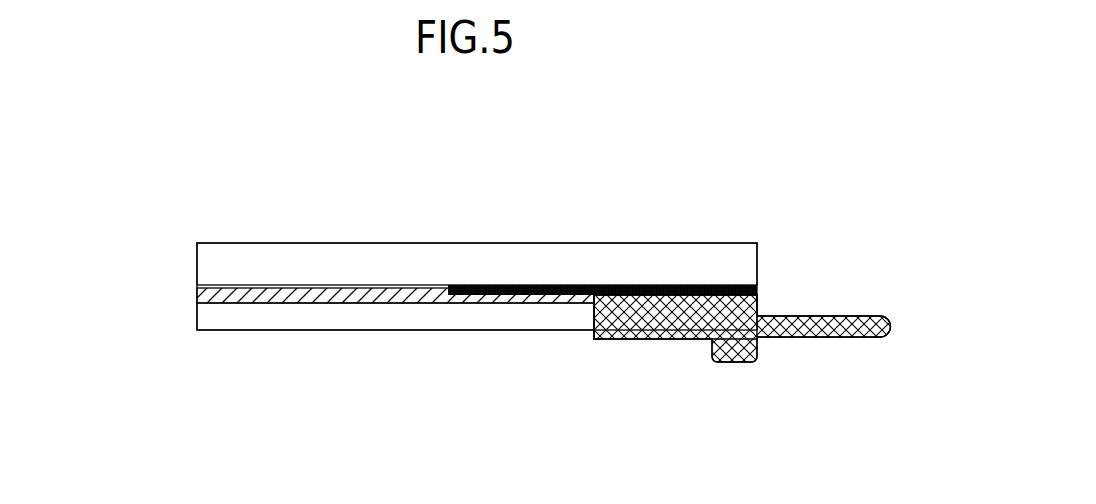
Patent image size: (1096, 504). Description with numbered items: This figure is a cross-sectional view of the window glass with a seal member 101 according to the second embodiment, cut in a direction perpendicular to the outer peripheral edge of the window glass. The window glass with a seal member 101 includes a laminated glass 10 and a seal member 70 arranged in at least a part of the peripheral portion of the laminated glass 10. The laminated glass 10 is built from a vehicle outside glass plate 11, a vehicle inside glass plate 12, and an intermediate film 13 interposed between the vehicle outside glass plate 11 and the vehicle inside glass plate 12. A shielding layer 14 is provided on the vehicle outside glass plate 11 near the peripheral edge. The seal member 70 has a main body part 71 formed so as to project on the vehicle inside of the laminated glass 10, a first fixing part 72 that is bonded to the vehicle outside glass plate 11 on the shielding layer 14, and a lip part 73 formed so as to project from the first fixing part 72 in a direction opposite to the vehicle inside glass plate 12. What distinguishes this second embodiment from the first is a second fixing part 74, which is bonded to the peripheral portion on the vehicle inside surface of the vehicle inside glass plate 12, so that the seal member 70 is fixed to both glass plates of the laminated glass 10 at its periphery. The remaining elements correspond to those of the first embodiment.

The window glass with a seal member 101 is at (117, 138).
The laminated glass 10 is at (345, 225).
The vehicle outside glass plate 11 is at (175, 262).
The vehicle inside glass plate 12 is at (175, 322).
The intermediate film 13 is at (175, 296).
The shielding layer 14 is at (501, 262).
The seal member 70 is at (780, 288).
The main body part 71 is at (749, 367).
The first fixing part 72 is at (667, 340).
The lip part 73 is at (803, 350).
The second fixing part 74 is at (580, 358).